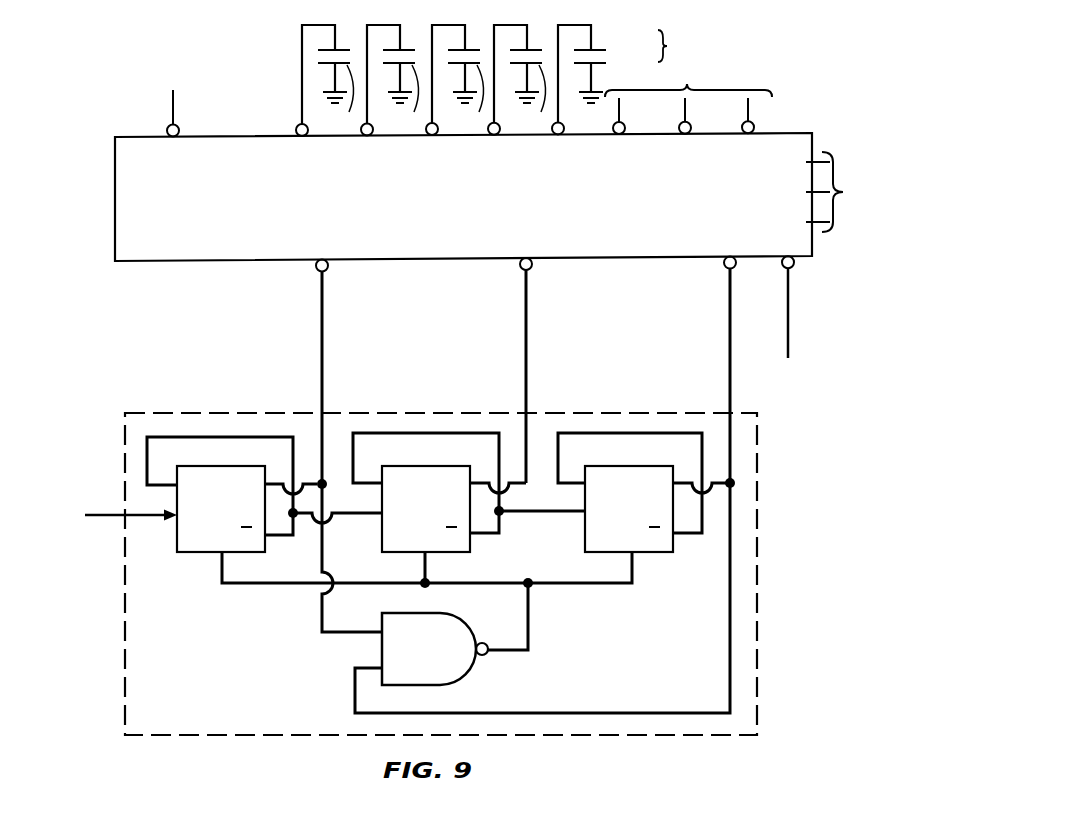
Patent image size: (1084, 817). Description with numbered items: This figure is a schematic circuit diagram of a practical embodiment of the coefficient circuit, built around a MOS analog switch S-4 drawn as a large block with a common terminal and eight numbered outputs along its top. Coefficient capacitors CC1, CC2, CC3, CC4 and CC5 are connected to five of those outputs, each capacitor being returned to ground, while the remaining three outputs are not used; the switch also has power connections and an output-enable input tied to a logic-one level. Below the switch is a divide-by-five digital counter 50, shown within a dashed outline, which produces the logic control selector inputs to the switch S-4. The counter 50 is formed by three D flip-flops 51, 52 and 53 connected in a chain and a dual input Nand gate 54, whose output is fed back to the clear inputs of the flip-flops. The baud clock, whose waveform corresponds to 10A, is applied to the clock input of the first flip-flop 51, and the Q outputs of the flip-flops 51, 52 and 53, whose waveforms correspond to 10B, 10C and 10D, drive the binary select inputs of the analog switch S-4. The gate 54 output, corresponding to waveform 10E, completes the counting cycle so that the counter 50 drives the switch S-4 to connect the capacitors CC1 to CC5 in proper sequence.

The MOS analog switch S-4 is at (217, 265).
The coefficient capacitor CC1 is at (328, 78).
The coefficient capacitor CC2 is at (393, 78).
The coefficient capacitor CC3 is at (458, 78).
The coefficient capacitor CC4 is at (520, 78).
The coefficient capacitor CC5 is at (601, 62).
The baud clock waveform 10A is at (107, 513).
The flip-flop waveform 10B is at (323, 312).
The flip-flop waveform 10C is at (527, 312).
The flip-flop waveform 10D is at (731, 312).
The gate waveform 10E is at (529, 622).
The digital counter 50 is at (758, 593).
The D flip-flop 51 is at (230, 472).
The D flip-flop 52 is at (432, 472).
The D flip-flop 53 is at (637, 472).
The Nand gate 54 is at (460, 678).